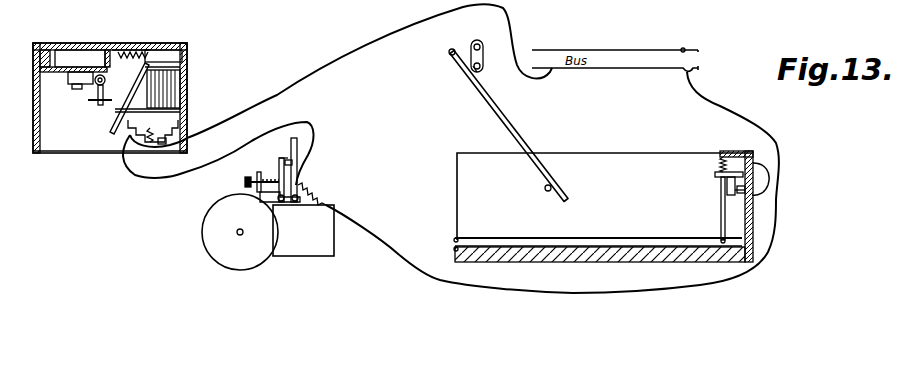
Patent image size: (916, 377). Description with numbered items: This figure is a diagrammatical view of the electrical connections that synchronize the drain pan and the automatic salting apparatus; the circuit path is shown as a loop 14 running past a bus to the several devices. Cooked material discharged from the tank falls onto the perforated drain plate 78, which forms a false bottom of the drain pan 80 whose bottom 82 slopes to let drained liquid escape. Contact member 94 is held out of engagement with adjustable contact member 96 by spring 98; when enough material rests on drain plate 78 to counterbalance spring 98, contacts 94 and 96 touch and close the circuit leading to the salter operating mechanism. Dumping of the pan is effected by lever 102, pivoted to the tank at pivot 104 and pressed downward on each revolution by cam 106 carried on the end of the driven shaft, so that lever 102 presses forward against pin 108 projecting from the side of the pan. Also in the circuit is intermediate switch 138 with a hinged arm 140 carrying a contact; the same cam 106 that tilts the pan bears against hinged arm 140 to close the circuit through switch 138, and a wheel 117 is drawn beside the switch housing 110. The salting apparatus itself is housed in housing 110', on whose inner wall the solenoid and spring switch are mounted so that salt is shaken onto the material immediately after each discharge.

The hull outline 14 is at (451, 146).
The housing 110' is at (145, 91).
The wheel 117 is at (215, 243).
The bottomless housing 110 is at (308, 225).
The intermediate switch 138 is at (325, 208).
The hinged arm 140 is at (300, 178).
The lever 102 is at (505, 103).
The pivot 104 is at (448, 52).
The cam 106 is at (473, 63).
The pin 108 is at (546, 191).
The drain pan 80 is at (752, 218).
The perforated drain plate 78 is at (622, 237).
The bottom 82 is at (602, 258).
The spring 98 is at (718, 163).
The contact member 94 is at (715, 180).
The adjustable contact member 96 is at (727, 185).